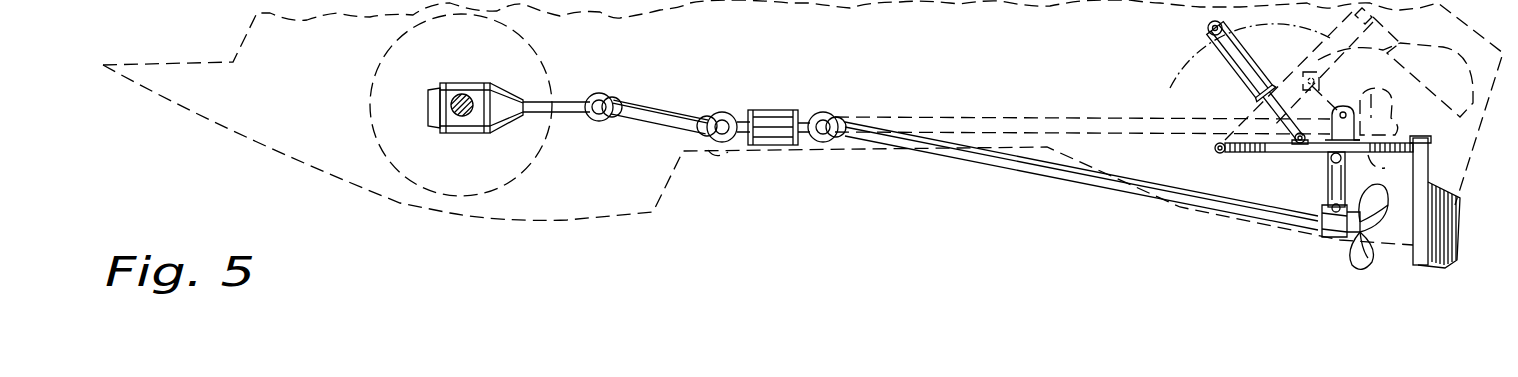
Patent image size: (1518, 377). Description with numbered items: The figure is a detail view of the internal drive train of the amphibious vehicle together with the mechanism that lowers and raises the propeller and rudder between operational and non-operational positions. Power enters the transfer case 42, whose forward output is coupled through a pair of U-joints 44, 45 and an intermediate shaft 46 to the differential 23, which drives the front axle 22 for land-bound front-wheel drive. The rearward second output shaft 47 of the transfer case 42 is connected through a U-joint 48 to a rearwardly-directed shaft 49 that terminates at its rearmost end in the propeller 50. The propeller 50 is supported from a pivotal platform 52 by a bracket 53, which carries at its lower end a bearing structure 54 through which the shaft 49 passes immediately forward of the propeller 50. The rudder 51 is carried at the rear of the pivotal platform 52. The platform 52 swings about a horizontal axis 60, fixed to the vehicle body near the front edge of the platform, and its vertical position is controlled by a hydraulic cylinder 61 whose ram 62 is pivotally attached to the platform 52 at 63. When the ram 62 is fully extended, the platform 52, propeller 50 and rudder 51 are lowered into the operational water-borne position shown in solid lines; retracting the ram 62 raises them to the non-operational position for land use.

The front axle 22 is at (470, 97).
The differential 23 is at (455, 84).
The transfer case 42 is at (772, 110).
The U-joint 44 is at (723, 112).
The U-joint 45 is at (598, 92).
The intermediate shaft 46 is at (647, 100).
The second output shaft 47 is at (810, 112).
The U-joint 48 is at (837, 112).
The rearwardly-directed shaft 49 is at (975, 160).
The propeller 50 is at (1345, 257).
The rudder 51 is at (1468, 216).
The pivotal platform 52 is at (1285, 155).
The bracket 53 is at (1330, 195).
The bearing structure 54 is at (1300, 223).
The horizontal axis 60 is at (1213, 148).
The hydraulic cylinder 61 is at (1269, 31).
The ram 62 is at (1332, 118).
The pivotal attachment 63 is at (1304, 145).